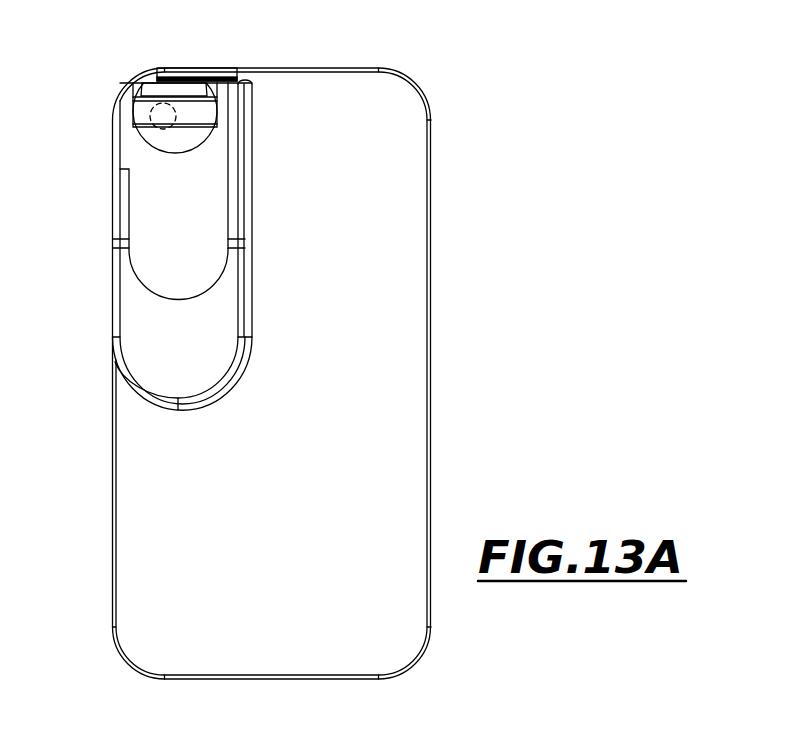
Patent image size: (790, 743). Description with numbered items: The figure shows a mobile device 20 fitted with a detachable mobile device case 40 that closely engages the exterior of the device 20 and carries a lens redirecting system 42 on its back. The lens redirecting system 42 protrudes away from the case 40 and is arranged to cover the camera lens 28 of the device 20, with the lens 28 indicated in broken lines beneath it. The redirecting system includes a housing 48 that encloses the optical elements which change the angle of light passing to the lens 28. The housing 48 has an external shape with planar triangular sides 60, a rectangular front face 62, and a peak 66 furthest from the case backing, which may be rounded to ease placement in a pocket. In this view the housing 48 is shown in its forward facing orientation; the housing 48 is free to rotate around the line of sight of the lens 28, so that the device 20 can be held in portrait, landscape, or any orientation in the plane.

The mobile device 20 is at (395, 168).
The lens 28 is at (160, 117).
The mobile device case 40 is at (423, 93).
The lens redirecting system 42 is at (103, 79).
The housing 48 is at (130, 134).
The planar triangular sides 60 is at (132, 108).
The rectangular front face 62 is at (166, 89).
The peak 66 is at (210, 100).